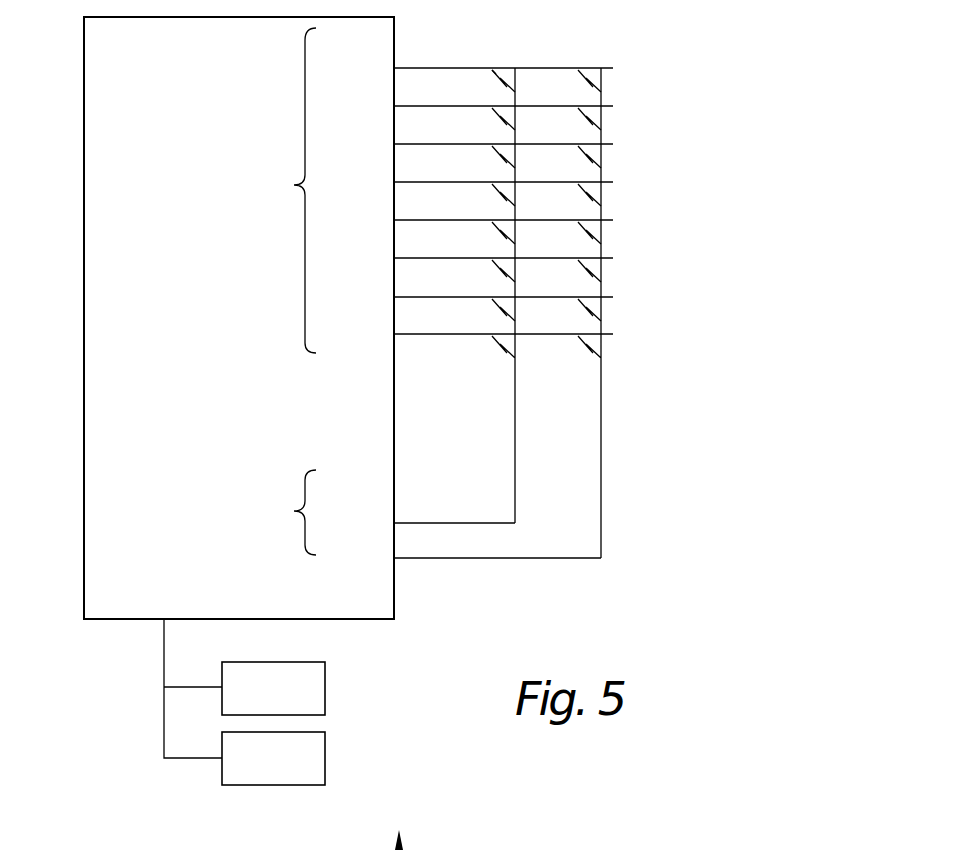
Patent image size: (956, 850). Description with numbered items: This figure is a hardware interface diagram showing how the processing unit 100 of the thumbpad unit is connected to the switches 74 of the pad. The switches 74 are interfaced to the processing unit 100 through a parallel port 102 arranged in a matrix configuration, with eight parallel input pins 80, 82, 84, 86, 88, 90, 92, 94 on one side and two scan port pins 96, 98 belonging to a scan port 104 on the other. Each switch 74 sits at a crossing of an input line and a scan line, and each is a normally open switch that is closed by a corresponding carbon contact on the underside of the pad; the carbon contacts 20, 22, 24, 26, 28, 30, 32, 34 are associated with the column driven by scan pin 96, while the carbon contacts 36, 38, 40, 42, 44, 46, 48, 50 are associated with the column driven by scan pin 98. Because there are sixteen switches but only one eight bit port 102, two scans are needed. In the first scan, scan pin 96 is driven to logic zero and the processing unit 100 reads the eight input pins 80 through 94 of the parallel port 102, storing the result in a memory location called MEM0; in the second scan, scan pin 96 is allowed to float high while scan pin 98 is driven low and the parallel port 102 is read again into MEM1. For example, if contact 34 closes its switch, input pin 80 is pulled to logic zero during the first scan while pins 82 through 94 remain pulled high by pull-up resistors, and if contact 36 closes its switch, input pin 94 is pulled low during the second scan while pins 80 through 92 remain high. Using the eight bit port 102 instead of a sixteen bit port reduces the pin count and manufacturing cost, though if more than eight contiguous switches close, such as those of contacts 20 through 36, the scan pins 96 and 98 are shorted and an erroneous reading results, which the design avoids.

The processing unit 100 is at (83, 133).
The parallel port 102 is at (284, 190).
The scan port 104 is at (284, 512).
The input pin 80 is at (394, 68).
The input pin 82 is at (394, 106).
The input pin 84 is at (394, 144).
The input pin 86 is at (394, 182).
The input pin 88 is at (394, 220).
The input pin 90 is at (394, 258).
The input pin 92 is at (394, 297).
The input pin 94 is at (394, 334).
The carbon contact 20 is at (497, 352).
The carbon contact 22 is at (490, 317).
The carbon contact 24 is at (490, 278).
The carbon contact 26 is at (490, 240).
The carbon contact 28 is at (490, 202).
The carbon contact 30 is at (490, 164).
The carbon contact 32 is at (490, 126).
The carbon contact 34 is at (490, 88).
The carbon contact 36 is at (585, 352).
The carbon contact 38 is at (576, 317).
The carbon contact 40 is at (576, 278).
The carbon contact 42 is at (576, 240).
The carbon contact 44 is at (576, 202).
The carbon contact 46 is at (576, 164).
The carbon contact 48 is at (576, 126).
The carbon contact 50 is at (576, 88).
The switch 74 is at (496, 68).
The scan port pin 96 is at (430, 522).
The scan port pin 98 is at (432, 558).